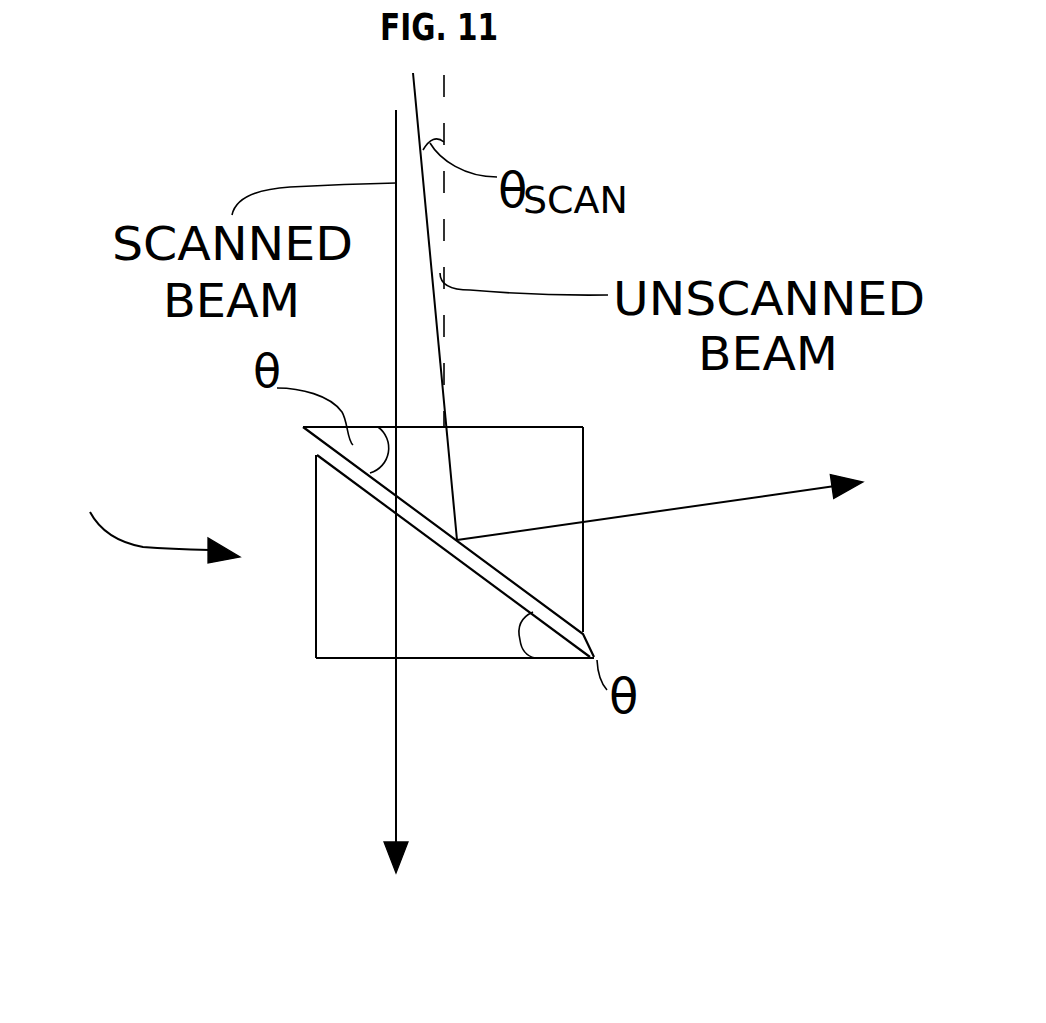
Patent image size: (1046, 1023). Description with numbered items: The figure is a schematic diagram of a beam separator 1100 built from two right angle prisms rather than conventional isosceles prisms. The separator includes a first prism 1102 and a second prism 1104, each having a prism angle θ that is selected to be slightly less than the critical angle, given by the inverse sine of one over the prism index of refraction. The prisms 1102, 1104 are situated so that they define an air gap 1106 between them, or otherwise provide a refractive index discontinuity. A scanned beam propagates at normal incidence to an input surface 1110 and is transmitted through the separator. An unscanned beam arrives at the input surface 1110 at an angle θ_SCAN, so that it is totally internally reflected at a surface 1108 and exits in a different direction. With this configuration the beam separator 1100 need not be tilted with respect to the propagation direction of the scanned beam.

The beam separator 1100 is at (153, 512).
The first prism 1102 is at (550, 477).
The second prism 1104 is at (322, 630).
The air gap 1106 is at (532, 641).
The surface 1108 is at (497, 565).
The input surface 1110 is at (488, 427).